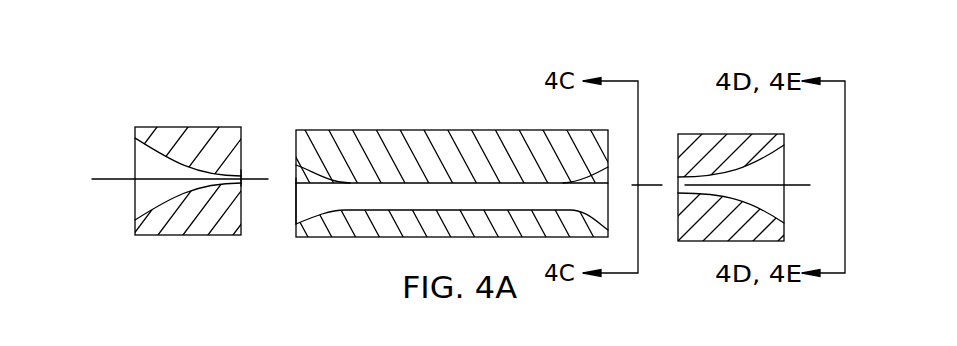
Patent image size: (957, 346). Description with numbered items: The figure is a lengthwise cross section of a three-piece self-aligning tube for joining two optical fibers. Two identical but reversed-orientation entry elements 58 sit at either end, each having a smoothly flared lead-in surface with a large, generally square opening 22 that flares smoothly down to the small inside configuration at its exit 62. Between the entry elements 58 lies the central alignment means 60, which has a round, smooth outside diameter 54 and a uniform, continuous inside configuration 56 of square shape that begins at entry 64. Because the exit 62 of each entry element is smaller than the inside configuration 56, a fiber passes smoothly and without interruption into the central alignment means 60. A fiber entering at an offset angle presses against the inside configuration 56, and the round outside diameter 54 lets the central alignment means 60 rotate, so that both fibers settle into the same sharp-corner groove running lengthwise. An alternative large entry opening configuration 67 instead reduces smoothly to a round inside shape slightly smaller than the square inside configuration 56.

The entry element 58 is at (176, 127).
The opening 22 is at (471, 202).
The large entry opening configuration 67 is at (873, 184).
The exit 62 is at (243, 176).
The outside diameter 54 is at (341, 128).
The inside configuration 56 is at (419, 182).
The central alignment means 60 is at (348, 239).
The entry 64 is at (295, 187).